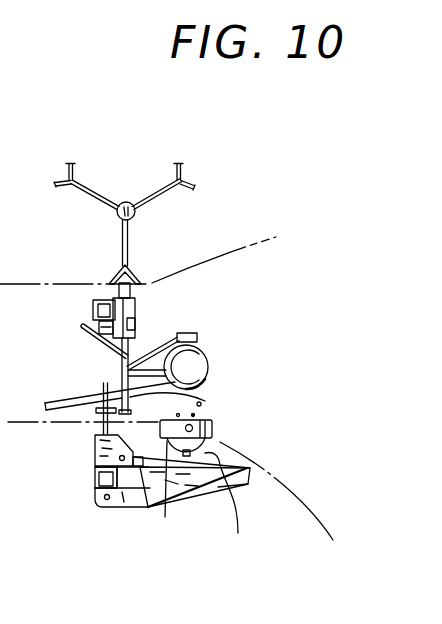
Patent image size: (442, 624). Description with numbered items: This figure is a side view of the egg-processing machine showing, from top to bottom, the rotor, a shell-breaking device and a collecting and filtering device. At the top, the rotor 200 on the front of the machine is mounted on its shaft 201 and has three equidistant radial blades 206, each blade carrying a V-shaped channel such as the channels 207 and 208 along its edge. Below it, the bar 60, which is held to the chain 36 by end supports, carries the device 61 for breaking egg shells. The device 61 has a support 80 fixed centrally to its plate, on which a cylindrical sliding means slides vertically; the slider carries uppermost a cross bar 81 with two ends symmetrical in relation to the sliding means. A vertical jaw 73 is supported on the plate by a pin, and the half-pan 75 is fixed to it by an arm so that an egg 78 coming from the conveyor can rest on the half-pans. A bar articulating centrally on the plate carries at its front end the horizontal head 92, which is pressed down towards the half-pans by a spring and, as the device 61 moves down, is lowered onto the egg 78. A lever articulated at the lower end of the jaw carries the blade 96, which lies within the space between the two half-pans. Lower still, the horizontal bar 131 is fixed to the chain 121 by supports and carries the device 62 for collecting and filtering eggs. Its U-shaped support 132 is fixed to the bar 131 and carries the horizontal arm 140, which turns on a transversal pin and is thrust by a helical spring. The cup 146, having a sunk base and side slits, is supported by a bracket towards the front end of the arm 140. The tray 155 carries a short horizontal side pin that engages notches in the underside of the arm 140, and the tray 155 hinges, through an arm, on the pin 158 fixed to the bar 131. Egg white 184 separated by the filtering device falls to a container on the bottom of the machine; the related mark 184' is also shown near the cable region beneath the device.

The chain 36 is at (303, 209).
The rotor 200 is at (110, 223).
The shaft 201 is at (122, 202).
The radial blade 206 is at (155, 191).
The V-shaped channel 207 is at (186, 171).
The V-shaped channel 208 is at (138, 275).
The cross bar 81 is at (110, 287).
The support 80 is at (136, 302).
The bar 60 is at (92, 304).
The vertical jaw 73 is at (108, 351).
The device for breaking egg shells 61 is at (104, 367).
The egg 78 is at (198, 359).
The horizontal head 92 is at (198, 338).
The half-pan 75 is at (210, 378).
The blade 96 is at (204, 402).
The egg white 184 is at (235, 430).
The U-shaped support 132 is at (93, 445).
The device for collecting and filtering eggs 62 is at (86, 470).
The horizontal bar 131 is at (95, 478).
The pin 158 is at (107, 501).
The tray 155 is at (180, 491).
The horizontal arm 140 is at (241, 487).
The cup 146 is at (163, 495).
The motor cable 184' is at (236, 513).
The chain 121 is at (296, 483).